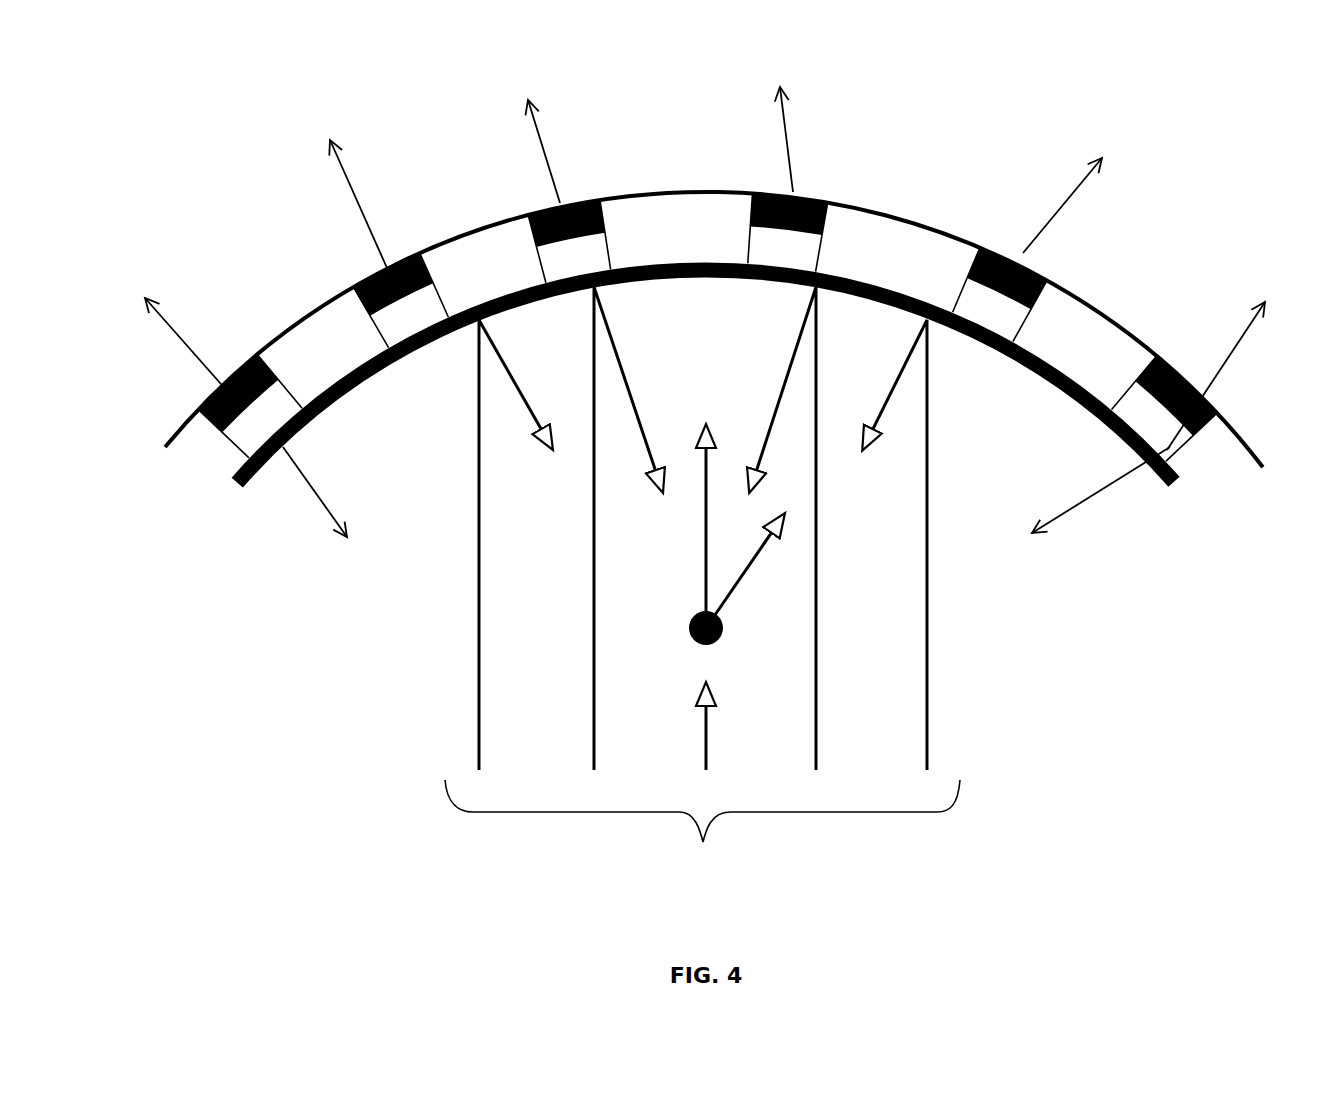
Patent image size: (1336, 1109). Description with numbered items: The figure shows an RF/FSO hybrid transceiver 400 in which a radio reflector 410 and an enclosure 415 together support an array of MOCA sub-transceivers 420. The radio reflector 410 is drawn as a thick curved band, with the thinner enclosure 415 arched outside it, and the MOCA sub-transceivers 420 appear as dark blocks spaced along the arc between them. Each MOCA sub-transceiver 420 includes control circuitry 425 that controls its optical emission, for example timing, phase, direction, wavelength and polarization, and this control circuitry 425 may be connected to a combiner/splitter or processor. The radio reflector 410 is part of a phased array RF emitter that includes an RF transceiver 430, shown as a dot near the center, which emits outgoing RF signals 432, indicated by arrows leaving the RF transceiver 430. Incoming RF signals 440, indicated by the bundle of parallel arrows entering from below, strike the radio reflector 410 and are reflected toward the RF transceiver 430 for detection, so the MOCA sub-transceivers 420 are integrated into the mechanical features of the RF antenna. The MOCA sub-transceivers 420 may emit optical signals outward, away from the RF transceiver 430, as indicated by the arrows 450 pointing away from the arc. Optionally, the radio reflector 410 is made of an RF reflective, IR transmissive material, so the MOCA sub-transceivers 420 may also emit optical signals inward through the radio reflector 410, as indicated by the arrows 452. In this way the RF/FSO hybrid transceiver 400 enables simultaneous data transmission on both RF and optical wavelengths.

The RF/FSO hybrid transceiver 400 is at (236, 172).
The radio reflector 410 is at (360, 385).
The enclosure 415 is at (182, 416).
The MOCA sub-transceiver 420 is at (272, 360).
The control circuitry 425 is at (228, 440).
The RF transceiver 430 is at (690, 640).
The outgoing RF signals 432 is at (700, 515).
The incoming RF signals 440 is at (702, 586).
The optical signals emitted outward 450 is at (183, 335).
The optical signals emitted through radio reflector 452 is at (312, 500).